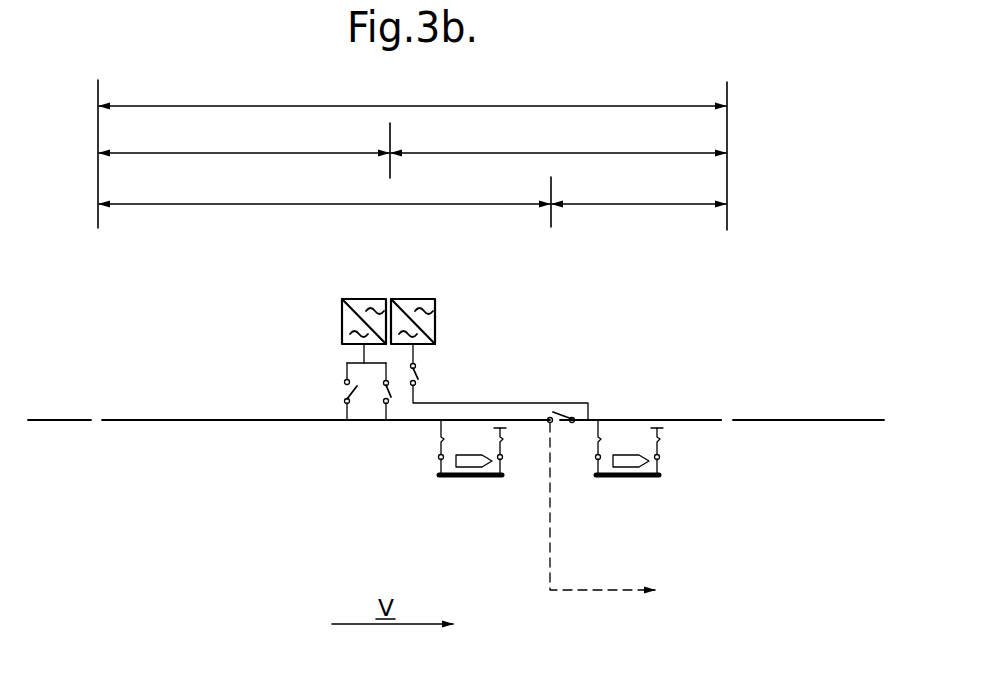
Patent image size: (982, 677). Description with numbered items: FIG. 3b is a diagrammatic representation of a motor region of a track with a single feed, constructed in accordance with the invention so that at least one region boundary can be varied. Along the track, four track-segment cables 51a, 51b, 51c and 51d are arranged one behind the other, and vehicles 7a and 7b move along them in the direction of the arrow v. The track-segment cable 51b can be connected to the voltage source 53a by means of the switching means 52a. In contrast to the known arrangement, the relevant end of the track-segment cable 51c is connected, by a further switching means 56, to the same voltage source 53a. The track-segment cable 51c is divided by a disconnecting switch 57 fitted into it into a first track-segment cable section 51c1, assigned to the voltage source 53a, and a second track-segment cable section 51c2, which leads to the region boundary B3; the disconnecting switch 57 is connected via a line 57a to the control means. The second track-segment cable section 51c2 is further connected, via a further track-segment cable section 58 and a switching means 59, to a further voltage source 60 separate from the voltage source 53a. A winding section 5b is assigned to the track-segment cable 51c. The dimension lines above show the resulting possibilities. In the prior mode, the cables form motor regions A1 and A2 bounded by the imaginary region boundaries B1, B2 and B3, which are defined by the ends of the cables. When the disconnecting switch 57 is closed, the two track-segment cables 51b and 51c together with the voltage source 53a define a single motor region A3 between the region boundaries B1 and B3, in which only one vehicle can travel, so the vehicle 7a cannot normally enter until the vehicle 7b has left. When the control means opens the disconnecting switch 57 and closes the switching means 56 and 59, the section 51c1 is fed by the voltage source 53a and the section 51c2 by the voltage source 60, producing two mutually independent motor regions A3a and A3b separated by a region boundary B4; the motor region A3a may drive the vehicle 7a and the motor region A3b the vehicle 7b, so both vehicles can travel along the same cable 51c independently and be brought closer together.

The track-segment cable 51a is at (55, 421).
The track-segment cable 51b is at (157, 421).
The track-segment cable 51c is at (683, 416).
The first track-segment cable section 51c1 is at (406, 421).
The second track-segment cable section 51c2 is at (705, 421).
The track-segment cable 51d is at (843, 421).
The switching means 52a is at (340, 387).
The voltage source 53a is at (341, 316).
The further voltage source 60 is at (436, 320).
The switching means 59 is at (416, 383).
The further track-segment cable section 58 is at (510, 403).
The disconnecting switch 57 is at (573, 423).
The line 57a is at (548, 541).
The further switching means 56 is at (383, 403).
The vehicle 7a is at (465, 466).
The vehicle 7b is at (623, 456).
The winding section 5b is at (633, 465).
The motor region A1 is at (244, 140).
The motor region A2 is at (558, 140).
The motor region A3 is at (412, 92).
The motor region A3a is at (324, 192).
The motor region A3b is at (639, 192).
The region boundary B1 is at (98, 101).
The region boundary B2 is at (392, 138).
The region boundary B3 is at (727, 97).
The region boundary B4 is at (551, 224).